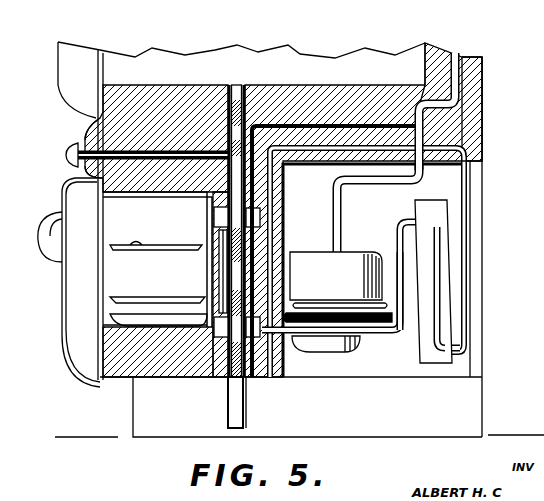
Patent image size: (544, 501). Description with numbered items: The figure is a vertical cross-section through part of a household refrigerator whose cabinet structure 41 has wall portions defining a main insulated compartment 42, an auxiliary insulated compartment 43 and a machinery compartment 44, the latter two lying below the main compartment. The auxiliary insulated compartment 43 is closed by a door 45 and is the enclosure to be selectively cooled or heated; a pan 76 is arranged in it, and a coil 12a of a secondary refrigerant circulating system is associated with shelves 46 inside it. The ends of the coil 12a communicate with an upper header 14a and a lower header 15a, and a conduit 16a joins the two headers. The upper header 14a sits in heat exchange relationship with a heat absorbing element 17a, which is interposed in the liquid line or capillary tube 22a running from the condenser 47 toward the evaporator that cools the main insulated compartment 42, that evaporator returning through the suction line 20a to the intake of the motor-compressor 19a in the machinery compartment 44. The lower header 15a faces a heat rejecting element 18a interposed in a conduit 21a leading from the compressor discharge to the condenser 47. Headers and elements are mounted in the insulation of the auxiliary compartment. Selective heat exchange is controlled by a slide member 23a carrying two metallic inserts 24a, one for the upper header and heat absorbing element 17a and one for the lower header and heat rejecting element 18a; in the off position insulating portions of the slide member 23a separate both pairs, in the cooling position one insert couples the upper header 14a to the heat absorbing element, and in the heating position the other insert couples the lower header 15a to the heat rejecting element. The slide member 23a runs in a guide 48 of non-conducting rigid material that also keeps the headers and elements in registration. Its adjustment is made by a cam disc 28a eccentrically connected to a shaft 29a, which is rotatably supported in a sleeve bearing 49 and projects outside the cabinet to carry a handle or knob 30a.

The coil 12a is at (168, 287).
The upper header 14a is at (211, 214).
The lower header 15a is at (186, 378).
The conduit 16a is at (219, 267).
The heat absorbing element 17a is at (262, 222).
The heat rejecting element 18a is at (262, 356).
The motor-compressor 19a is at (395, 246).
The suction line 20a is at (368, 182).
The conduit 21a is at (401, 333).
The liquid line or capillary tube 22a is at (467, 183).
The slide member 23a is at (252, 362).
The metallic inserts 24a is at (255, 304).
The cam disc 28a is at (285, 86).
The shaft 29a is at (80, 135).
The handle or knob 30a is at (68, 157).
The cabinet structure 41 is at (483, 117).
The main insulated compartment 42 is at (249, 77).
The auxiliary insulated compartment 43 is at (160, 229).
The machinery compartment 44 is at (320, 192).
The door 45 is at (68, 312).
The shelves 46 is at (135, 248).
The condenser 47 is at (440, 365).
The guide 48 is at (230, 413).
The sleeve bearing 49 is at (90, 172).
The pan 76 is at (120, 318).